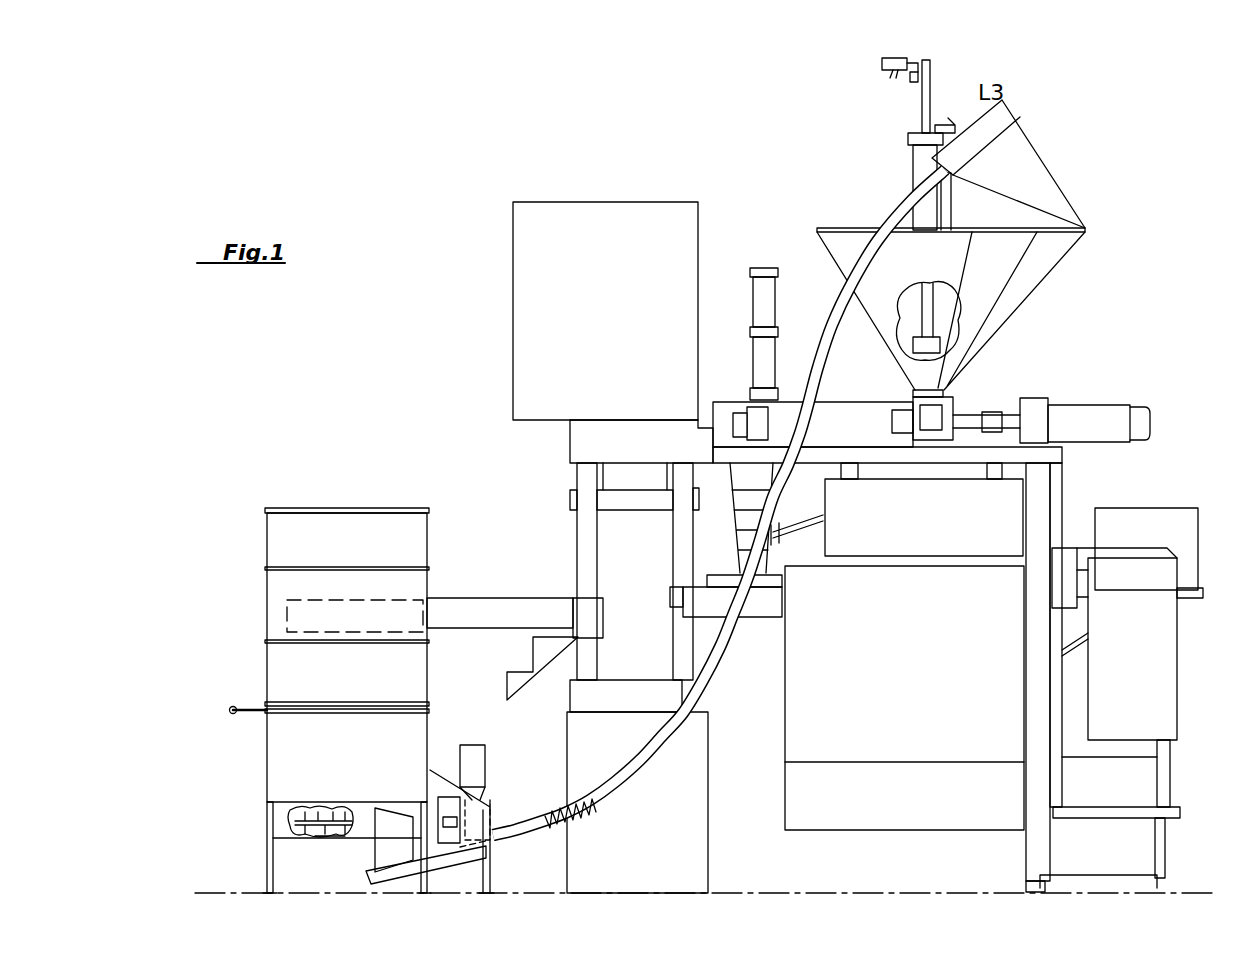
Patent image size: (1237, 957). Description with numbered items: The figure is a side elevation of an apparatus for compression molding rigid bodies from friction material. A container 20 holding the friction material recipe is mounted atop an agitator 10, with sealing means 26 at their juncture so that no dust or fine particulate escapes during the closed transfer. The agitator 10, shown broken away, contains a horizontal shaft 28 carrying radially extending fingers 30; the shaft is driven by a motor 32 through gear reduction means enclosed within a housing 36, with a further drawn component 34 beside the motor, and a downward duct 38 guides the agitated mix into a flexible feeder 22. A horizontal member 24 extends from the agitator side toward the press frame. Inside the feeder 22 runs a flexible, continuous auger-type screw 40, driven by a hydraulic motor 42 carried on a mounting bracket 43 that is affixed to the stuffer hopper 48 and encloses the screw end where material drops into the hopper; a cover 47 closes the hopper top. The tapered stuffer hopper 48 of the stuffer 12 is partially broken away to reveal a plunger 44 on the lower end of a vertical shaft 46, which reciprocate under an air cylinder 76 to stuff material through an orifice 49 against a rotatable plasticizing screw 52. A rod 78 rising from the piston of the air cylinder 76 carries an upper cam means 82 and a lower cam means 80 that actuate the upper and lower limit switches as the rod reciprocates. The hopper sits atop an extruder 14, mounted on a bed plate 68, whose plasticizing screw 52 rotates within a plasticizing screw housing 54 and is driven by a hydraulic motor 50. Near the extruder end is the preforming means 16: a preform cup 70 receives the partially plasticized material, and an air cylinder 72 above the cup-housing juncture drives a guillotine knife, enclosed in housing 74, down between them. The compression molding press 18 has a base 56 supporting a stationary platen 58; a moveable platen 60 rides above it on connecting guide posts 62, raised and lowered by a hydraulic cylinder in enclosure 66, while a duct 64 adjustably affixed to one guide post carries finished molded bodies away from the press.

The agitator 10 is at (262, 752).
The stuffer 12 is at (1015, 283).
The extruder 14 is at (840, 398).
The preforming means 16 is at (748, 405).
The compression molding press 18 is at (510, 272).
The container 20 is at (432, 530).
The feed means 22 is at (522, 836).
The support arm 24 is at (450, 597).
The sealing means 26 is at (265, 700).
The horizontal shaft 28 is at (310, 815).
The fingers 30 is at (340, 838).
The motor 32 is at (480, 765).
The metering device 34 is at (448, 812).
The housing 36 is at (485, 812).
The duct 38 is at (392, 830).
The flexible screw 40 is at (580, 820).
The hydraulic motor 42 is at (1000, 120).
The mounting bracket 43 is at (1037, 180).
The plunger 44 is at (935, 345).
The vertical shaft 46 is at (935, 320).
The cover 47 is at (848, 230).
The stuffer hopper 48 is at (842, 247).
The orifice 49 is at (945, 398).
The hydraulic motor 50 is at (1090, 403).
The plasticizing screw 52 is at (916, 432).
The plasticizing screw housing 54 is at (855, 412).
The base 56 is at (700, 832).
The stationary platen 58 is at (578, 697).
The moveable platen 60 is at (605, 496).
The guide posts 62 is at (585, 570).
The duct 64 is at (520, 672).
The enclosure 66 is at (580, 440).
The bed plate 68 is at (1062, 455).
The preform cup 70 is at (733, 427).
The air cylinder 72 is at (758, 295).
The housing 74 is at (770, 365).
The air cylinder 76 is at (930, 150).
The rod 78 is at (925, 110).
The lower cam means 80 is at (938, 93).
The upper cam means 82 is at (910, 82).